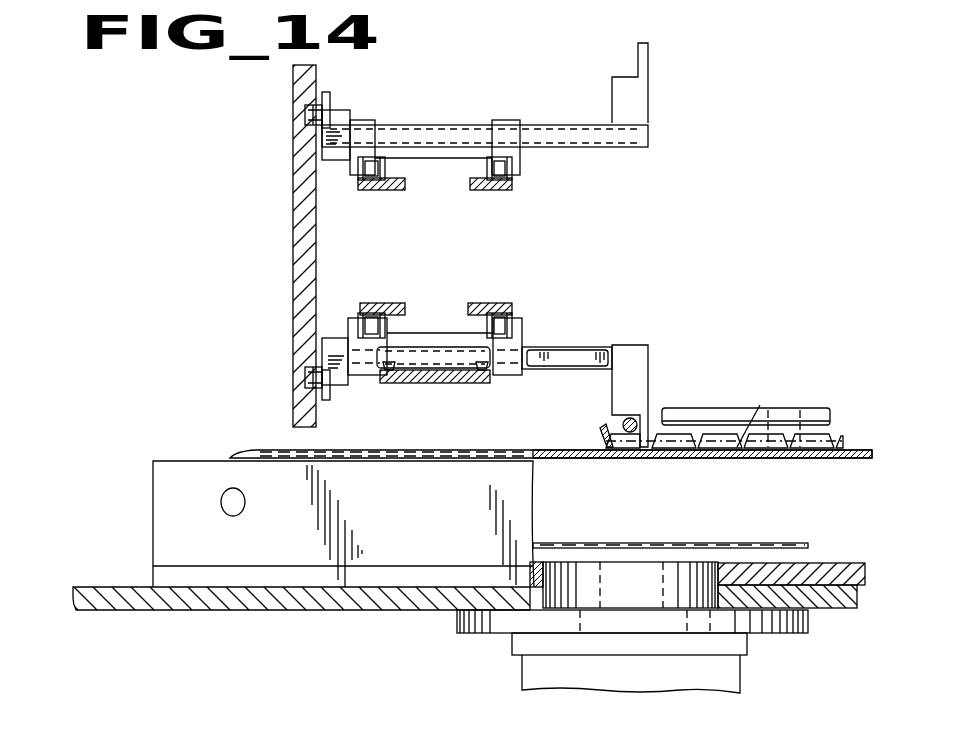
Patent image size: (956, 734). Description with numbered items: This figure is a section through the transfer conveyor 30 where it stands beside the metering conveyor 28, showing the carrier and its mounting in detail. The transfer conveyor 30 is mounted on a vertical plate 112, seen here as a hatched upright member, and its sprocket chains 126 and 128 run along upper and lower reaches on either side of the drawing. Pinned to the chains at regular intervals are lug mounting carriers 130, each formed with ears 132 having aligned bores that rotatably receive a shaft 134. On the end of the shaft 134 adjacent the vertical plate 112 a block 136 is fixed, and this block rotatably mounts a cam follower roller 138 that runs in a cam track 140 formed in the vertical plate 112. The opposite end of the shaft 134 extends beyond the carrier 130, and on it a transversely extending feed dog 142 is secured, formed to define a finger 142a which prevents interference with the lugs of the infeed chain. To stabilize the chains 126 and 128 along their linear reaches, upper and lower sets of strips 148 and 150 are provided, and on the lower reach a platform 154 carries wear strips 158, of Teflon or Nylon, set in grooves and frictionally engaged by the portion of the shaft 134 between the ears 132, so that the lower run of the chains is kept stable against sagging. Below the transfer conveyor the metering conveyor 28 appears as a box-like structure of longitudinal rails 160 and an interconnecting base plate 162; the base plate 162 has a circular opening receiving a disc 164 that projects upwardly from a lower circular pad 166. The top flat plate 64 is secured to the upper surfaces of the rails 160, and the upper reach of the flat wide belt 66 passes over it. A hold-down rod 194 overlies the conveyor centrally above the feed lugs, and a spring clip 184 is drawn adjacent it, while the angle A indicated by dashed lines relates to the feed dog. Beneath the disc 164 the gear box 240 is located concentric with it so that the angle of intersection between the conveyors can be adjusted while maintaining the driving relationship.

The vertical plate 112 is at (293, 252).
The sprocket chain 126 is at (358, 182).
The sprocket chain 128 is at (515, 182).
The lug mounting carrier 130 is at (528, 110).
The ears 132 is at (372, 122).
The shaft 134 is at (645, 133).
The block 136 is at (327, 147).
The cam follower roller 138 is at (305, 118).
The cam track 140 is at (325, 106).
The feed dog 142 is at (640, 88).
The finger 142a is at (648, 50).
The upper stabilizing strips 148 is at (470, 190).
The lower stabilizing strips 150 is at (476, 303).
The platform 154 is at (460, 383).
The wear strips 158 is at (482, 366).
The longitudinal rails 160 is at (432, 522).
The base plate 162 is at (828, 565).
The disc 164 is at (647, 594).
The lower circular pad 166 is at (457, 627).
The spring clip 184 is at (598, 440).
The hold-down rod 194 is at (622, 427).
The gear box 240 is at (654, 687).
The metering conveyor 28 is at (853, 446).
The transfer conveyor 30 is at (712, 114).
The top flat plate 64 is at (545, 458).
The flat wide belt 66 is at (515, 450).
The angle A is at (803, 430).